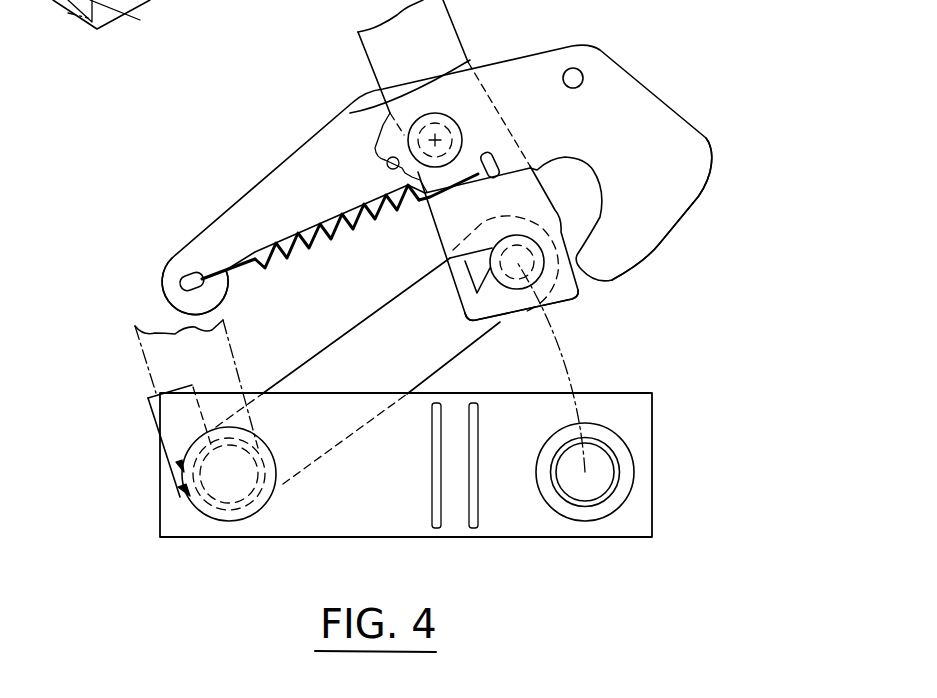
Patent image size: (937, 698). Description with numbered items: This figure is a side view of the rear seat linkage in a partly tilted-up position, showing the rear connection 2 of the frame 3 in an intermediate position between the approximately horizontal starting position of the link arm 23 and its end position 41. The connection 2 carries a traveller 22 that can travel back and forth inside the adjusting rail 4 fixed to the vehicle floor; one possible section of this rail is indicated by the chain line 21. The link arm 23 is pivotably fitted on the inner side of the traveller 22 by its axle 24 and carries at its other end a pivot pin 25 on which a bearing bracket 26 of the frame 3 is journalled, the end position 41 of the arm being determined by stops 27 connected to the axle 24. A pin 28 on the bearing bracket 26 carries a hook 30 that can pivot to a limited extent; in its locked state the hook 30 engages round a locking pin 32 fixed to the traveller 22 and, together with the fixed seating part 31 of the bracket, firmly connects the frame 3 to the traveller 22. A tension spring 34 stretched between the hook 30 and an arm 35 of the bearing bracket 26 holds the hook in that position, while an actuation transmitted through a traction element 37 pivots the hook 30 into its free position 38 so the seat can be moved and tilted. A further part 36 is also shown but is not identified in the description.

The rear connection 2 is at (700, 95).
The frame 3 is at (380, 58).
The adjusting rail 4 is at (120, 8).
The chain line 21 is at (140, 19).
The traveller 22 is at (637, 503).
The link arm 23 is at (345, 352).
The axle 24 is at (205, 485).
The pivot pin 25 is at (520, 264).
The bearing bracket 26 is at (580, 292).
The stop 27 is at (150, 408).
The pin 28 is at (417, 140).
The hook 30 is at (657, 190).
The fixed seating part 31 is at (460, 283).
The locking pin 32 is at (597, 463).
The tension spring 34 is at (333, 175).
The arm 35 is at (236, 226).
The striker 36 is at (437, 43).
The traction element 37 is at (576, 74).
The free position 38 is at (650, 213).
The end position 41 is at (147, 366).